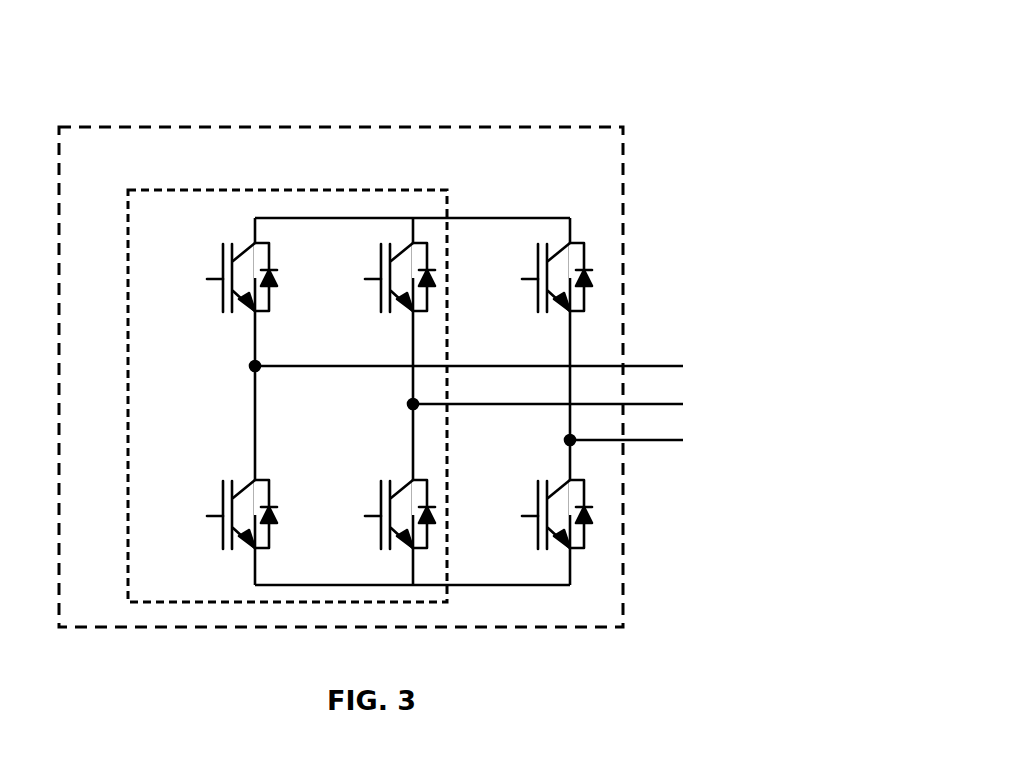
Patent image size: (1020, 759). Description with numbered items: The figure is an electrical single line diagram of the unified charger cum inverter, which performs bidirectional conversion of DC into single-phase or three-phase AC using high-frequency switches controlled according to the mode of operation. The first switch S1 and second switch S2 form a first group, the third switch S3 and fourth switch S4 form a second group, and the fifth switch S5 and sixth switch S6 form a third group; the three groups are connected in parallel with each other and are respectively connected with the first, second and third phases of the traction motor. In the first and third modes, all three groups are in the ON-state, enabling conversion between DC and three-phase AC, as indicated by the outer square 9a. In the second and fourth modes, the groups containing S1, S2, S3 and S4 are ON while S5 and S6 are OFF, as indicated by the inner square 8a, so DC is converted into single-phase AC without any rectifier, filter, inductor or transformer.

The square indicating single-phase operation 8a is at (210, 186).
The square indicating three-phase operation 9a is at (622, 129).
The first switch S1 is at (217, 277).
The second switch S2 is at (217, 514).
The third switch S3 is at (385, 277).
The fourth switch S4 is at (385, 514).
The fifth switch S5 is at (541, 277).
The sixth switch S6 is at (541, 514).